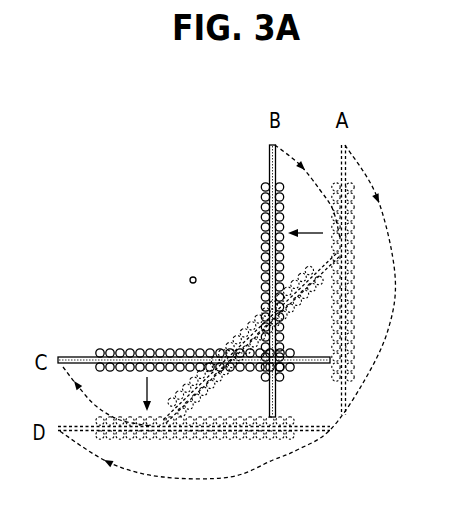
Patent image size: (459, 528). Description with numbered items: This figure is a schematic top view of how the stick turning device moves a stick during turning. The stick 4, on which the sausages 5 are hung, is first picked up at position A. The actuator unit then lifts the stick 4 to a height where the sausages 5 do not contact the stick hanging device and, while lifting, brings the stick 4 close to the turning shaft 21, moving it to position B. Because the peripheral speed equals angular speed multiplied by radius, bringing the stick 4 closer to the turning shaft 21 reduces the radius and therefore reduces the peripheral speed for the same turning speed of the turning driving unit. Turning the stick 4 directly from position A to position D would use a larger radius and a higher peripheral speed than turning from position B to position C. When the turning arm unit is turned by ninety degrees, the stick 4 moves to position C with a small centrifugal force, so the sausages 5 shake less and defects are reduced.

The stick 4 is at (270, 170).
The sausages 5 is at (264, 210).
The turning shaft 21 is at (190, 281).